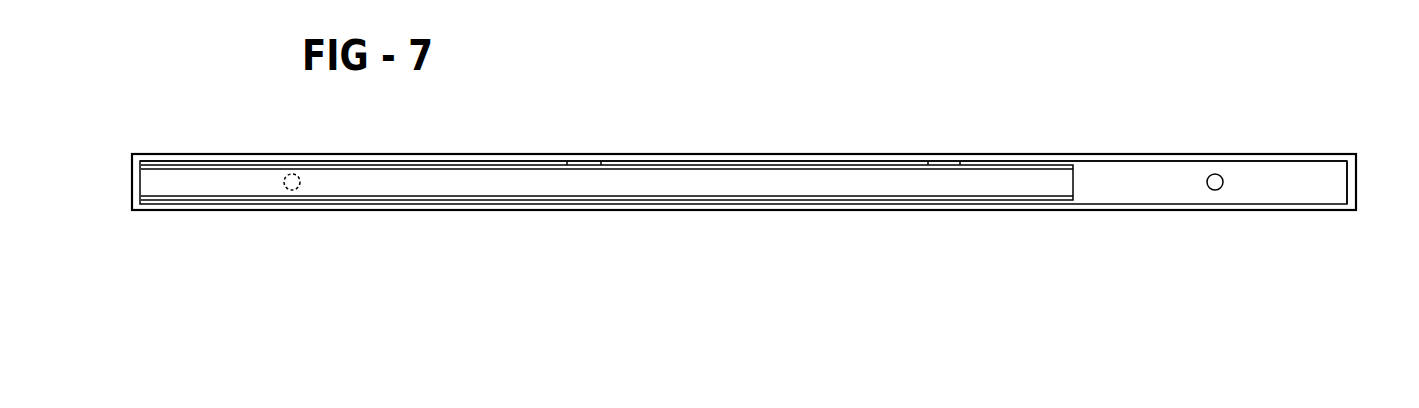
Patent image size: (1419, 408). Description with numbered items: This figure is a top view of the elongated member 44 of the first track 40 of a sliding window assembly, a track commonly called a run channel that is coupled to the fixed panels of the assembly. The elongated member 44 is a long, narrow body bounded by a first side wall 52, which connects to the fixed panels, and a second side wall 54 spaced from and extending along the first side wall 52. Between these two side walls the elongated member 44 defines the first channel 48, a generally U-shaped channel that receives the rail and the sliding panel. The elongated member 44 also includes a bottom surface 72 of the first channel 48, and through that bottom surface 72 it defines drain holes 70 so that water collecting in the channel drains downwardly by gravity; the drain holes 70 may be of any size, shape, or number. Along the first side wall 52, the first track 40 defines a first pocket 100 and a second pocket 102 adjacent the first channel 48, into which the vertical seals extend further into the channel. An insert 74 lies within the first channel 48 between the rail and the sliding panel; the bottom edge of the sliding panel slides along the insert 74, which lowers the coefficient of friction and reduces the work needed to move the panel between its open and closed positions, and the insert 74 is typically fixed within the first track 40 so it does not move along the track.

The first track 40 is at (1280, 211).
The elongated member 44 is at (1112, 152).
The first channel 48 is at (1305, 173).
The first side wall 52 is at (1262, 157).
The second side wall 54 is at (1227, 211).
The drain hole 70 is at (1215, 174).
The bottom surface 72 is at (1338, 178).
The insert 74 is at (1047, 180).
The first pocket 100 is at (587, 160).
The second pocket 102 is at (942, 158).